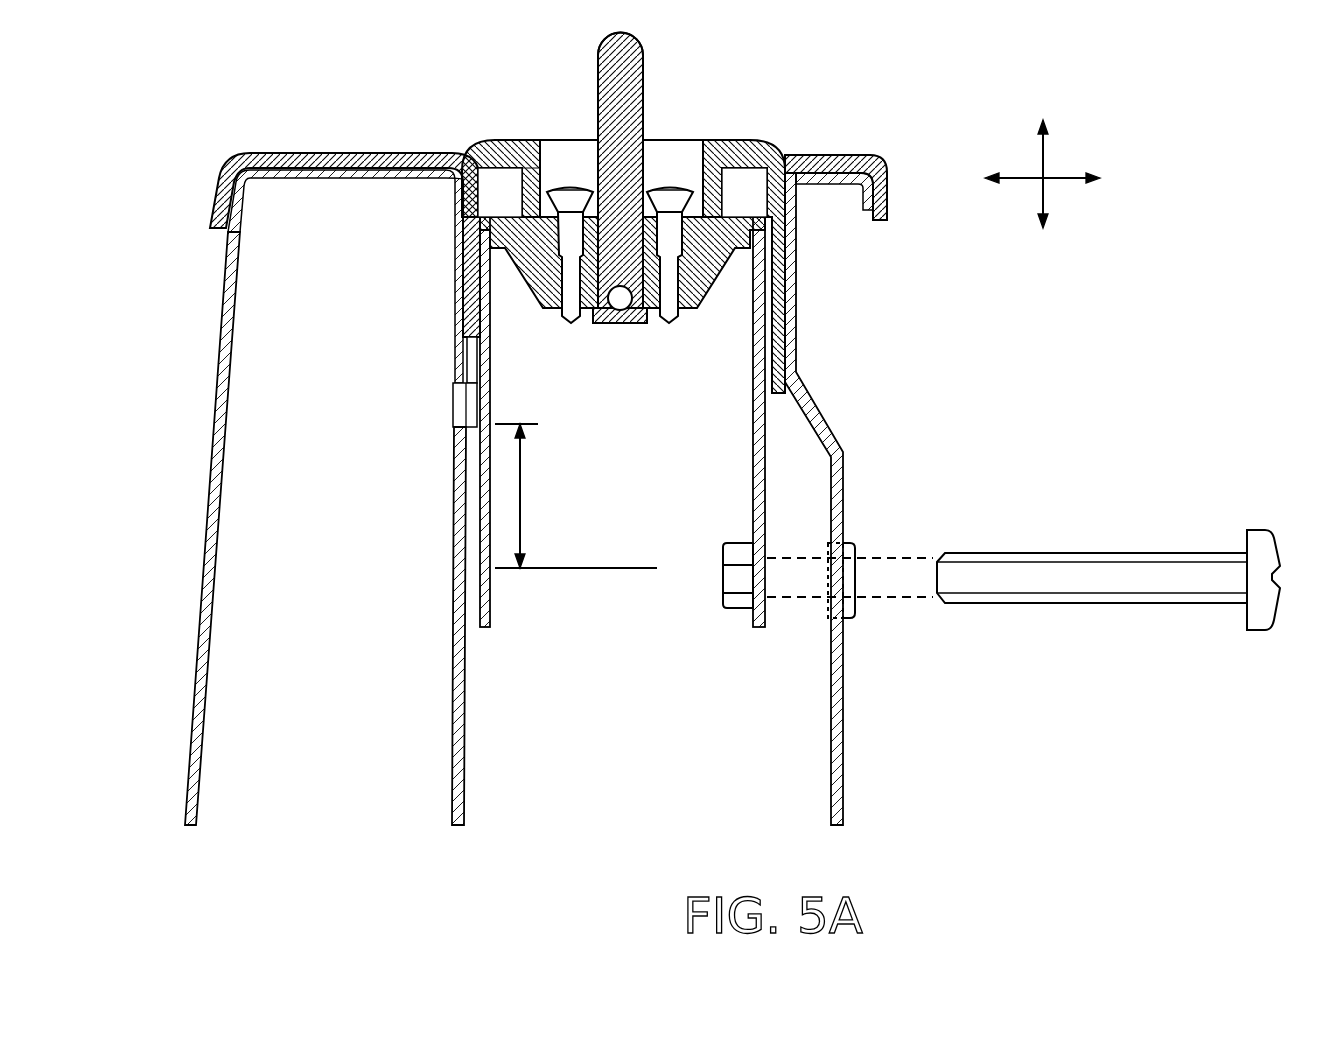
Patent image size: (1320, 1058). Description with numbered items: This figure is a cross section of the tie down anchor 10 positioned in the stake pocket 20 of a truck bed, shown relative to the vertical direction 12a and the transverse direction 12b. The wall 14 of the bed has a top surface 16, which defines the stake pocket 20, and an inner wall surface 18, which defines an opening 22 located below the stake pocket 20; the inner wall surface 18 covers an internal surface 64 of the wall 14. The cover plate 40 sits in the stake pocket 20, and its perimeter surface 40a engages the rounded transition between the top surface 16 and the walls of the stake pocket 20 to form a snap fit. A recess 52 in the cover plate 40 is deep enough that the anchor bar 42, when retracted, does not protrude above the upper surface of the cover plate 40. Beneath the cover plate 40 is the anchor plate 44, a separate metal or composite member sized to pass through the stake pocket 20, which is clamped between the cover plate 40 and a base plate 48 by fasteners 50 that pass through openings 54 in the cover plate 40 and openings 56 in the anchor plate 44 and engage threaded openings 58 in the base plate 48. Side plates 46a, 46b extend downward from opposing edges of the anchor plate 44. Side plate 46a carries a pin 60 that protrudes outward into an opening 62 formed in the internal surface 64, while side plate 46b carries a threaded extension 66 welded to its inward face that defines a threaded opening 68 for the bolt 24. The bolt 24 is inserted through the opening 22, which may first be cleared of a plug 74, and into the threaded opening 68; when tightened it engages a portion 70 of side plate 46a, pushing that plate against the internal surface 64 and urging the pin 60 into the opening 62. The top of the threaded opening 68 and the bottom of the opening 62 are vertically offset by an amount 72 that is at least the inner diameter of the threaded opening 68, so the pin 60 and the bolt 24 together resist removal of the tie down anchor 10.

The tie down anchor 10 is at (748, 56).
The vertical direction 12a is at (1043, 155).
The transverse direction 12b is at (1050, 180).
The wall 14 is at (190, 405).
The top surface 16 is at (362, 153).
The inner wall surface 18 is at (840, 683).
The stake pocket 20 is at (457, 187).
The opening 22 is at (840, 543).
The bolt 24 is at (1160, 553).
The cover plate 40 is at (483, 162).
The perimeter surface 40a is at (797, 172).
The anchor bar 42 is at (643, 85).
The anchor plate 44 is at (515, 247).
The side plate 46a is at (483, 527).
The side plate 46b is at (758, 507).
The base plate 48 is at (572, 320).
The fasteners 50 is at (572, 312).
The recess 52 is at (542, 165).
The openings 54 is at (553, 217).
The openings 56 is at (527, 196).
The threaded openings 58 is at (552, 285).
The pin 60 is at (460, 407).
The opening 62 is at (455, 383).
The internal surface 64 is at (463, 672).
The threaded extension 66 is at (732, 545).
The threaded opening 68 is at (732, 567).
The portion 70 is at (512, 591).
The amount 72 is at (520, 473).
The plug 74 is at (853, 617).